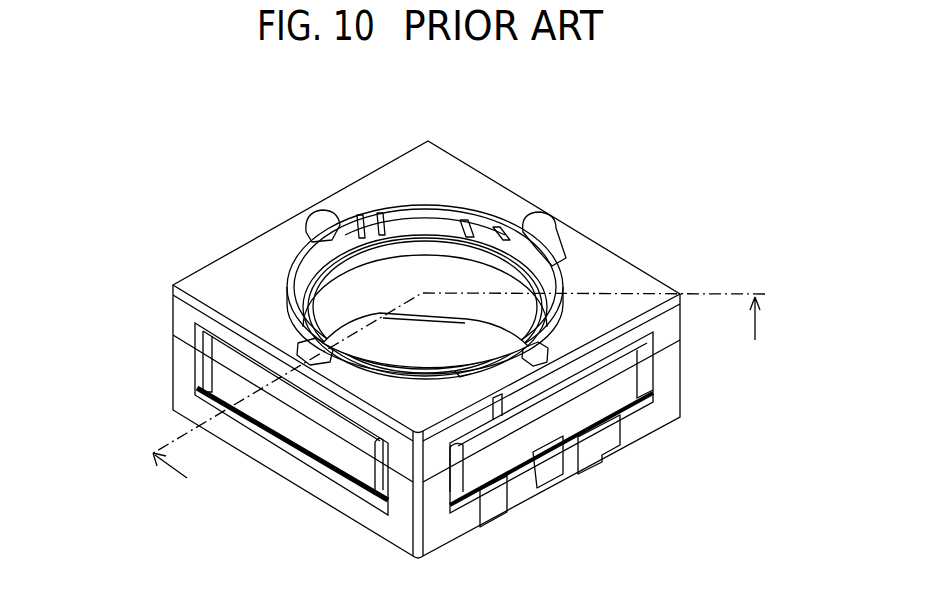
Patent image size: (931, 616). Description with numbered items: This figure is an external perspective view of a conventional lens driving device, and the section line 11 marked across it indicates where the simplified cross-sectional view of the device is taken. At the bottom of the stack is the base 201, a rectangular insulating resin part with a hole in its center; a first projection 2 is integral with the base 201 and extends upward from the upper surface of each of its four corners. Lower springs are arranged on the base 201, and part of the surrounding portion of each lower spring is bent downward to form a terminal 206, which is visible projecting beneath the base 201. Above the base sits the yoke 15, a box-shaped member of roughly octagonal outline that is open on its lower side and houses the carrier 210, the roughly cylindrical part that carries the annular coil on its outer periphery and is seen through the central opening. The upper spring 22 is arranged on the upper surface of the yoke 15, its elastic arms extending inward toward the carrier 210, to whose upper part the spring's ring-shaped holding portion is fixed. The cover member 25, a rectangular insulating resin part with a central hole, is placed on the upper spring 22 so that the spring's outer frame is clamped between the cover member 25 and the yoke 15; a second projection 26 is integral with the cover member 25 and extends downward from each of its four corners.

The first projection 2 is at (183, 365).
The cover member 25 is at (448, 170).
The second projection 26 is at (182, 323).
The yoke 15 is at (342, 450).
The base 201 is at (657, 413).
The terminal 206 is at (596, 452).
The upper spring 22 is at (518, 243).
The carrier 210 is at (337, 297).
The section line 11- 11 is at (458, 395).